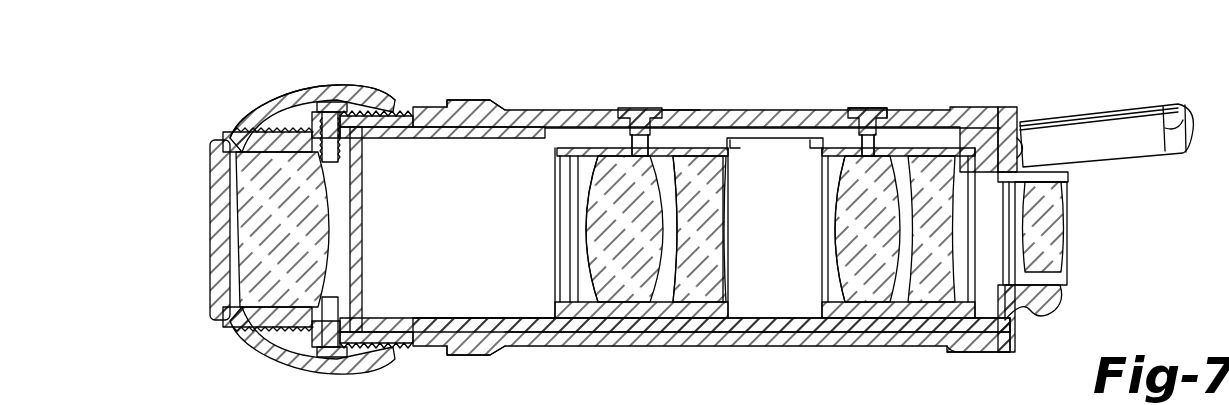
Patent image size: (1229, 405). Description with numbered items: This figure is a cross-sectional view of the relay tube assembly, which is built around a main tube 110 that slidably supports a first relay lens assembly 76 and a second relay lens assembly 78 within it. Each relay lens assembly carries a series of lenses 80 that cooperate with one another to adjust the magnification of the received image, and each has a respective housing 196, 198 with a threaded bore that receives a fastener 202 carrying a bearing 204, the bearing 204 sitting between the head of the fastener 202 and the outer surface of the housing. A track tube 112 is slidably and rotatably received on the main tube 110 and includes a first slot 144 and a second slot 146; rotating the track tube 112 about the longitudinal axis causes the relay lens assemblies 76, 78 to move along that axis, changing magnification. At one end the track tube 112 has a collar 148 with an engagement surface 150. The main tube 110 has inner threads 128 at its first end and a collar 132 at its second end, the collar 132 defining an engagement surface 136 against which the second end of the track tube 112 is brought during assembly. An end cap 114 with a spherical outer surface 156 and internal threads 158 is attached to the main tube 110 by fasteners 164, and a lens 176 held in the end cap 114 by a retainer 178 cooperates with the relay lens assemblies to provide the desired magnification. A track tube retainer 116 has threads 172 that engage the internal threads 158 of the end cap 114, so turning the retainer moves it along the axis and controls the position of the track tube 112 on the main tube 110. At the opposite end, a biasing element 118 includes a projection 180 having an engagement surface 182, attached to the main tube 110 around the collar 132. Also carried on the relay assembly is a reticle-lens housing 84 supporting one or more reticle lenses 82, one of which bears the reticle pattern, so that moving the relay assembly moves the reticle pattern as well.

The first relay lens assembly 76 is at (641, 312).
The second relay lens assembly 78 is at (881, 300).
The lenses 80 is at (617, 165).
The reticle lenses 82 is at (1037, 262).
The reticle-lens housing 84 is at (1072, 178).
The main tube 110 is at (547, 130).
The track tube 112 is at (479, 102).
The end cap 114 is at (341, 82).
The track tube retainer 116 is at (430, 105).
The biasing element 118 is at (1023, 115).
The inner threads 128 is at (264, 150).
The collar 132 is at (972, 352).
The engagement surface 136 is at (947, 345).
The first slot 144 is at (667, 112).
The second slot 146 is at (850, 112).
The collar 148 is at (465, 354).
The engagement surface 150 is at (436, 322).
The spherical outer surface 156 is at (296, 94).
The internal threads 158 is at (379, 340).
The fasteners 164 is at (332, 330).
The threads 172 is at (374, 114).
The lens 176 is at (317, 250).
The retainer 178 is at (210, 300).
The projection 180 is at (1117, 108).
The engagement surface 182 is at (1170, 126).
The housing 196 is at (732, 143).
The housing 198 is at (843, 152).
The fastener 202 is at (642, 114).
The bearing 204 is at (639, 112).